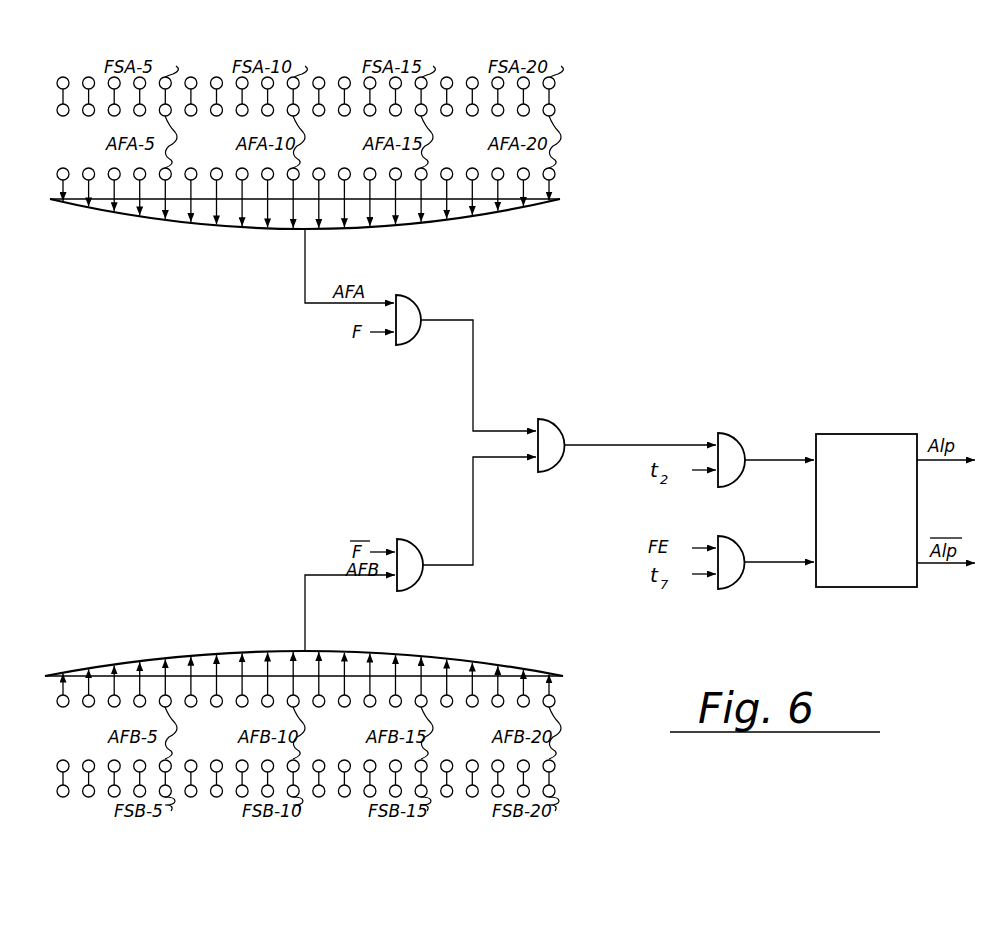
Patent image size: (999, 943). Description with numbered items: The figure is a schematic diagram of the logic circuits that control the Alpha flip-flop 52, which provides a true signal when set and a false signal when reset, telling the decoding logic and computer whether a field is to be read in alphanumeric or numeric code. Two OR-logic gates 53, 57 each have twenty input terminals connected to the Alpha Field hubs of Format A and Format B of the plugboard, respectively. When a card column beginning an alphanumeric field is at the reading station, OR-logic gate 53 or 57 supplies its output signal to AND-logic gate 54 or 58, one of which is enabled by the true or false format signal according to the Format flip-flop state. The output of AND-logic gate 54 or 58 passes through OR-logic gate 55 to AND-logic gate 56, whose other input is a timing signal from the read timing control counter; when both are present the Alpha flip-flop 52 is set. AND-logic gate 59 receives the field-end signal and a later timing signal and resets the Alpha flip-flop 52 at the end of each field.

The Alpha flip-flop 52 is at (854, 442).
The OR-logic gate 53 is at (432, 218).
The AND-logic gate 54 is at (424, 313).
The OR-logic gate 55 is at (560, 437).
The AND-logic gate 56 is at (740, 453).
The OR-logic gate 57 is at (400, 660).
The AND-logic gate 58 is at (409, 556).
The AND-logic gate 59 is at (740, 556).